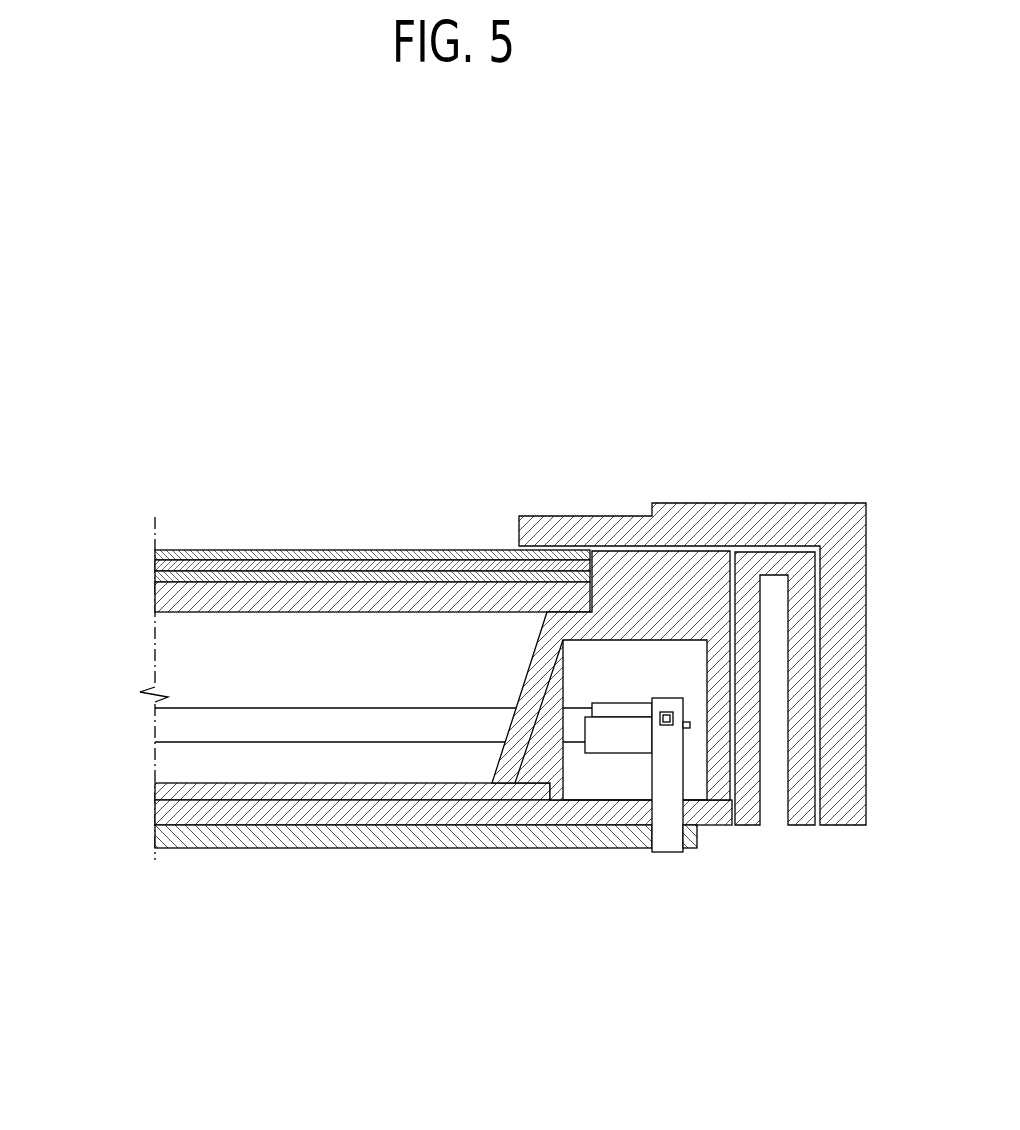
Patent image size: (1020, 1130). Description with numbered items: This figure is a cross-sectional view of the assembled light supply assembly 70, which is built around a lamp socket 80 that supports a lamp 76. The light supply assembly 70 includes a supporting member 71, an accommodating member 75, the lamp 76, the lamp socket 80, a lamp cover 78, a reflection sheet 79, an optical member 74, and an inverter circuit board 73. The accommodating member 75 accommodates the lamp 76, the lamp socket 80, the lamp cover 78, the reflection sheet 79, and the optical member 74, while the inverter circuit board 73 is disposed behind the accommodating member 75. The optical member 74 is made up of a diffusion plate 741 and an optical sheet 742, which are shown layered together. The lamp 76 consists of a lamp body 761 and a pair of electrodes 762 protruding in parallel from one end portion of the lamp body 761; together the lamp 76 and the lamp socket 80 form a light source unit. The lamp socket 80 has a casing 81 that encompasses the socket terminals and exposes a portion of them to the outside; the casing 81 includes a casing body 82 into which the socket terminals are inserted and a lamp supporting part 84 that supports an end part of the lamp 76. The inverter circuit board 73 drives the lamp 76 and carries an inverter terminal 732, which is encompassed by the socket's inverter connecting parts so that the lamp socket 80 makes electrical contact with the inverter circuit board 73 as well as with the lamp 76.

The light supply assembly 70 is at (498, 368).
The supporting member 71 is at (804, 503).
The inverter circuit board 73 is at (228, 848).
The inverter terminal 732 is at (690, 848).
The optical member 74 is at (55, 565).
The diffusion plate 741 is at (155, 610).
The optical sheet 742 is at (155, 551).
The accommodating member 75 is at (370, 815).
The lamp 76 is at (160, 728).
The lamp body 761 is at (435, 730).
The lamp cover 78 is at (668, 572).
The reflection sheet 79 is at (299, 787).
The lamp socket 80 is at (655, 856).
The casing 81 is at (595, 928).
The casing body 82 is at (660, 775).
The lamp supporting part 84 is at (598, 742).
The electrode 762 is at (688, 727).